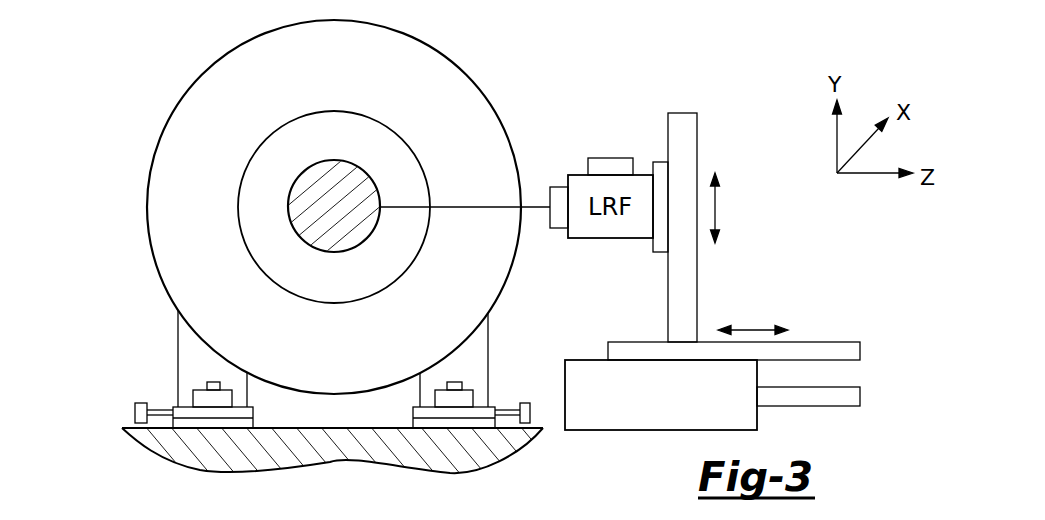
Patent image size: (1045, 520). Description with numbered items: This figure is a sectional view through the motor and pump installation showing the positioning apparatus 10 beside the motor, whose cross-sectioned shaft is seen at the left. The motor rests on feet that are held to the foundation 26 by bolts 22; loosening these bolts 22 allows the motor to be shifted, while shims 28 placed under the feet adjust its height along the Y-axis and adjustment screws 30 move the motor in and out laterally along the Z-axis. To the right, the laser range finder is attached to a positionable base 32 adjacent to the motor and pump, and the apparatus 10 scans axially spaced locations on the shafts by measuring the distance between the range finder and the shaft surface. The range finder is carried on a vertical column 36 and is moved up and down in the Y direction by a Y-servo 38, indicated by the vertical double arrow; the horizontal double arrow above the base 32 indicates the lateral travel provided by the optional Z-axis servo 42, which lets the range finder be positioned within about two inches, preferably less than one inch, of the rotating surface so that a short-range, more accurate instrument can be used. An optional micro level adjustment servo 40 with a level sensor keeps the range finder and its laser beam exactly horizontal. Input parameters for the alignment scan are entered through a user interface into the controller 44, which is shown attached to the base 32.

The positioning apparatus 10 is at (758, 257).
The bolts 22 is at (198, 390).
The foundation 26 is at (234, 450).
The shims 28 is at (413, 413).
The adjustment screws 30 is at (135, 414).
The positionable base 32 is at (626, 430).
The vertical column 36 is at (702, 127).
The Y-servo 38 is at (660, 253).
The micro level adjustment servo 40 is at (609, 158).
The Z-axis servo 42 is at (825, 342).
The controller 44 is at (838, 406).